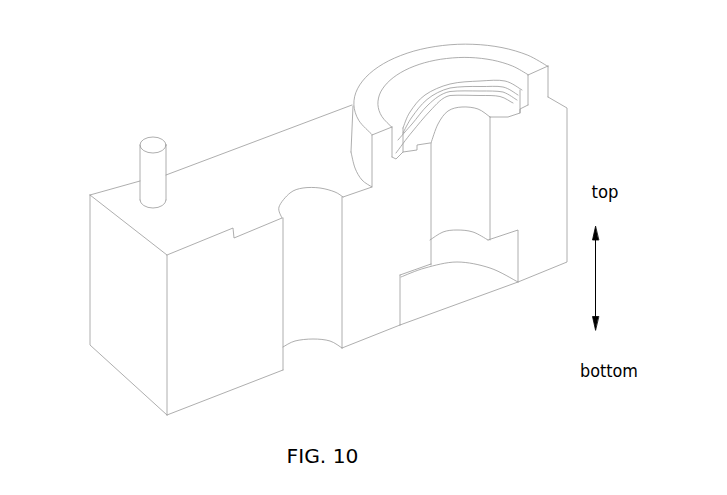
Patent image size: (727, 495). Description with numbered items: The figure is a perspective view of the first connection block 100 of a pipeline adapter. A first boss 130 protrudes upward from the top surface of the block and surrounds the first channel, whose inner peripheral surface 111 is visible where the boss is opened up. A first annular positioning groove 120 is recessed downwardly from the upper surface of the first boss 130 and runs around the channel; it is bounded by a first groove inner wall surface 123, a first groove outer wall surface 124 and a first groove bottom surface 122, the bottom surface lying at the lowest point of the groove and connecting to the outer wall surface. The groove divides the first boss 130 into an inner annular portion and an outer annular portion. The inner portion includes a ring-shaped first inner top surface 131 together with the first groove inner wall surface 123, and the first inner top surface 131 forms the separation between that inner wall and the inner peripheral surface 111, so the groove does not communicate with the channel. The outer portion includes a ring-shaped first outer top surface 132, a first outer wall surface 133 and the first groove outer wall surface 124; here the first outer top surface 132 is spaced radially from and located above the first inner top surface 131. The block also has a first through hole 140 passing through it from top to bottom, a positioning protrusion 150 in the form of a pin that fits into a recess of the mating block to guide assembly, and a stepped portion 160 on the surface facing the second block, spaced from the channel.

The first connection block 100 is at (257, 86).
The inner peripheral surface 111 is at (463, 220).
The first annular positioning groove 120 is at (427, 95).
The first groove bottom surface 122 is at (516, 117).
The first groove inner wall surface 123 is at (405, 146).
The first groove outer wall surface 124 is at (480, 68).
The first boss 130 is at (541, 88).
The first inner top surface 131 is at (467, 106).
The first outer top surface 132 is at (528, 63).
The first outer wall surface 133 is at (360, 147).
The first through hole 140 is at (295, 307).
The positioning protrusion 150 is at (152, 180).
The stepped portion 160 is at (190, 208).